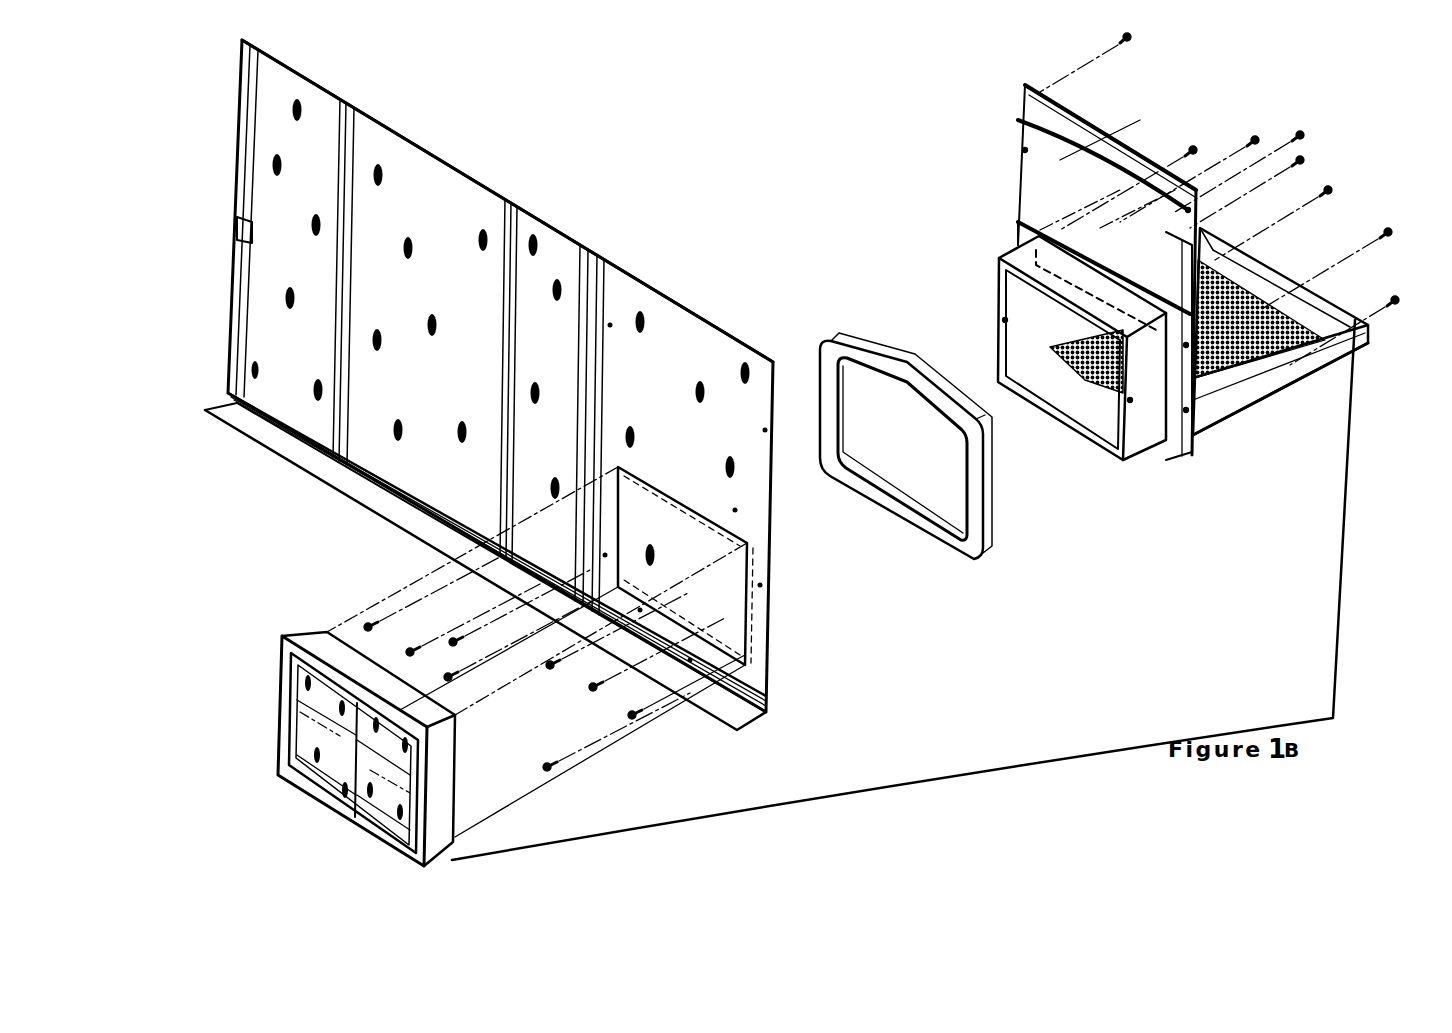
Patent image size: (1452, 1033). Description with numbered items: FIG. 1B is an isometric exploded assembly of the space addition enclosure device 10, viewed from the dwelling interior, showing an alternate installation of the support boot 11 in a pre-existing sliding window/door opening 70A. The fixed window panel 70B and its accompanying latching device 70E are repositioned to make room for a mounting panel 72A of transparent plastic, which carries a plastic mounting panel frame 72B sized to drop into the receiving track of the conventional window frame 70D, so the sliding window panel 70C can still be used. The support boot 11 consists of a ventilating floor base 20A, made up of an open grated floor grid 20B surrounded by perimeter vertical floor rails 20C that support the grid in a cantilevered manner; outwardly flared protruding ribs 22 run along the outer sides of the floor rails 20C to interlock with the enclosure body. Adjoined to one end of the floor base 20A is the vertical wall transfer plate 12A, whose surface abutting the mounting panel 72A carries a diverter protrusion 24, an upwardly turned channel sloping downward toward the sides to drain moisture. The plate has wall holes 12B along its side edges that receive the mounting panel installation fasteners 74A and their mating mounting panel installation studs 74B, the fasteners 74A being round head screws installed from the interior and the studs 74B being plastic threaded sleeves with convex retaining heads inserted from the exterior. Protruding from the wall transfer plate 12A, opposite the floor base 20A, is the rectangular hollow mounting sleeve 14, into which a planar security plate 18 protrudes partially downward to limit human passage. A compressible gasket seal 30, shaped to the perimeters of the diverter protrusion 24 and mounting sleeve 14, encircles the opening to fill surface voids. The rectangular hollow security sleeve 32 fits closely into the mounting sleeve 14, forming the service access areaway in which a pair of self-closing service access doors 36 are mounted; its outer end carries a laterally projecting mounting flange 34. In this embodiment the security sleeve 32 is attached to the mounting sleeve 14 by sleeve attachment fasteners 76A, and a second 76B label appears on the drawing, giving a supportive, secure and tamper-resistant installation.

The space addition enclosure device 10 is at (1132, 683).
The support boot 11 is at (1240, 440).
The wall transfer plate 12A is at (1052, 168).
The wall holes 12B is at (1040, 90).
The mounting sleeve 14 is at (1023, 298).
The security plate 18 is at (1014, 250).
The ventilating floor base 20A is at (1060, 385).
The floor grid 20B is at (1296, 355).
The floor rails 20C is at (1332, 350).
The protruding ribs 22 is at (1265, 405).
The diverter protrusion 24 is at (1130, 122).
The gasket seal 30 is at (988, 498).
The security sleeve 32 is at (478, 793).
The mounting flange 34 is at (365, 690).
The service access doors 36 is at (337, 731).
The sliding window/door opening 70A is at (650, 192).
The fixed window panel 70B is at (562, 283).
The sliding window panel 70C is at (270, 86).
The window frame 70D is at (282, 428).
The latching device 70E is at (236, 228).
The mounting panel 72A is at (667, 355).
The mounting panel frame 72B is at (592, 283).
The mounting panel installation fasteners 74A is at (368, 628).
The mounting panel installation studs 74B is at (1308, 160).
The sleeve attachment fasteners 76A is at (342, 741).
The mounting flange 76B is at (1005, 318).